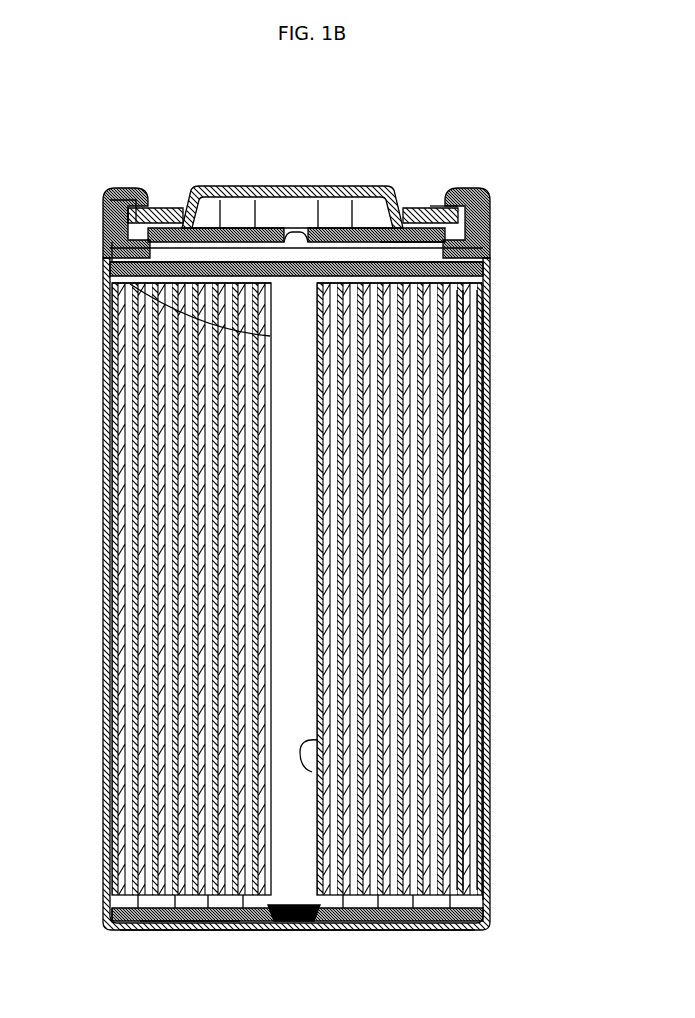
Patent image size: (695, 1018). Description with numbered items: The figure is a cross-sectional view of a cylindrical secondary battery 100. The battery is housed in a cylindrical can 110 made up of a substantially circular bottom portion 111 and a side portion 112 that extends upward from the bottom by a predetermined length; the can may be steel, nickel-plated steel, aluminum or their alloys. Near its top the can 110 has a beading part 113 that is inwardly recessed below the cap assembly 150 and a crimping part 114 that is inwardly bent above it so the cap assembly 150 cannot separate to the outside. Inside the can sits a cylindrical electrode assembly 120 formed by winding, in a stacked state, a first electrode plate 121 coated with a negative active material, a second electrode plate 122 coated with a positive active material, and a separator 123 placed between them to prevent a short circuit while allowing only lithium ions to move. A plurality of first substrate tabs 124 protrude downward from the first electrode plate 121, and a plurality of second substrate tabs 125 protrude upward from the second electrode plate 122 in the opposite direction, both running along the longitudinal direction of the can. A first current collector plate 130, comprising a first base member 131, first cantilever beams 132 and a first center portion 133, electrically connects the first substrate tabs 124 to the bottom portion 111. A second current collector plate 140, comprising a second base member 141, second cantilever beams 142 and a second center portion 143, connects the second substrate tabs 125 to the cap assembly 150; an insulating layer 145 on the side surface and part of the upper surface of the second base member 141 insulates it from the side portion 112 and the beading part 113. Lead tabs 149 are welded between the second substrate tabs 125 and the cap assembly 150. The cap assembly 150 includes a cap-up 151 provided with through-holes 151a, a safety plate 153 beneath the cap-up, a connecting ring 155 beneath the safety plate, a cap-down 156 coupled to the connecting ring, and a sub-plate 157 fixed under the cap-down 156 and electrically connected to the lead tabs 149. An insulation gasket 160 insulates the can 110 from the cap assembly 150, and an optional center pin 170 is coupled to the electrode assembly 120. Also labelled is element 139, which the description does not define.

The secondary battery 100 is at (563, 130).
The cylindrical can 110 is at (492, 661).
The bottom portion 111 is at (370, 932).
The side portion 112 is at (484, 711).
The beading part 113 is at (110, 224).
The crimping part 114 is at (108, 194).
The cylindrical electrode assembly 120 is at (570, 500).
The first electrode plate 121 is at (459, 508).
The second electrode plate 122 is at (477, 597).
The separator 123 is at (467, 551).
The first substrate tabs 124 is at (230, 905).
The second substrate tabs 125 is at (130, 286).
The first current collector plate 130 is at (492, 906).
The first base member 131 is at (110, 915).
The first cantilever beams 132 is at (172, 932).
The first center portion 133 is at (290, 924).
The terminal plate 139 is at (402, 220).
The second current collector plate 140 is at (492, 274).
The second base member 141 is at (110, 247).
The second cantilever beams 142 is at (146, 198).
The second center portion 143 is at (125, 338).
The insulating layer 145 is at (110, 271).
The lead tabs 149 is at (328, 212).
The cap assembly 150 is at (172, 160).
The cap-up 151 is at (263, 192).
The through-holes 151a is at (296, 230).
The safety plate 153 is at (390, 232).
The connecting ring 155 is at (436, 206).
The cap-down 156 is at (256, 232).
The sub-plate 157 is at (336, 232).
The insulation gasket 160 is at (472, 216).
The center pin 170 is at (312, 771).